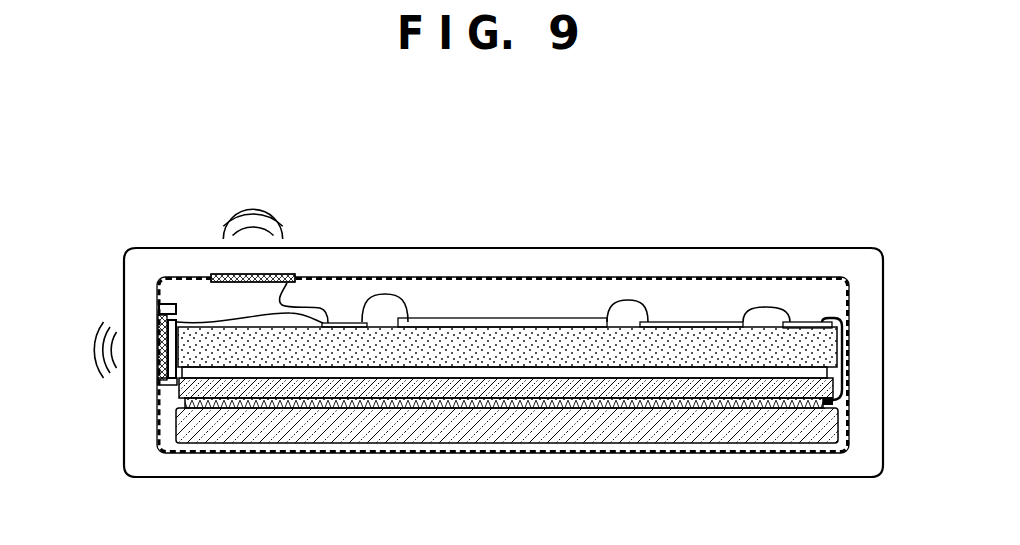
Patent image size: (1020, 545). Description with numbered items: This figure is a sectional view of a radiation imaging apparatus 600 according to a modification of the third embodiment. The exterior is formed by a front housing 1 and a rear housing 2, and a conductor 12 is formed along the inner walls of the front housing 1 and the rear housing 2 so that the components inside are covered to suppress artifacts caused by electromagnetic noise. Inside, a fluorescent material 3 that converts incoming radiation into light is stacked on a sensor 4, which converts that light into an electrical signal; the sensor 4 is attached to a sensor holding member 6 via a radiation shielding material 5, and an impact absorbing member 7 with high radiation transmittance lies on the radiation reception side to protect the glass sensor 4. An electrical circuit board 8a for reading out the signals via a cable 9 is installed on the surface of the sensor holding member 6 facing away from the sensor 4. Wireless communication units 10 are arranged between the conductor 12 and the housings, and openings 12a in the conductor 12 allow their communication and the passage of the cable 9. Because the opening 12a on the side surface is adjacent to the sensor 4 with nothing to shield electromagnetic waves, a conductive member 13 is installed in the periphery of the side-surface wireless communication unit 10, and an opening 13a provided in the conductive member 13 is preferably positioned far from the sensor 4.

The imaging apparatus 600 is at (606, 166).
The front housing 1 is at (632, 478).
The rear housing 2 is at (832, 248).
The fluorescent material 3 is at (826, 402).
The sensor 4 is at (833, 383).
The radiation shielding material 5 is at (828, 372).
The sensor holding member 6 is at (833, 343).
The impact absorbing member 7 is at (835, 425).
The electrical circuit board 8a is at (803, 322).
The cable 9 is at (199, 320).
The wireless communication unit 10 is at (222, 274).
The conductor 12 is at (497, 277).
The opening 12a is at (158, 283).
The conductive member 13 is at (162, 448).
The opening 13a is at (176, 310).